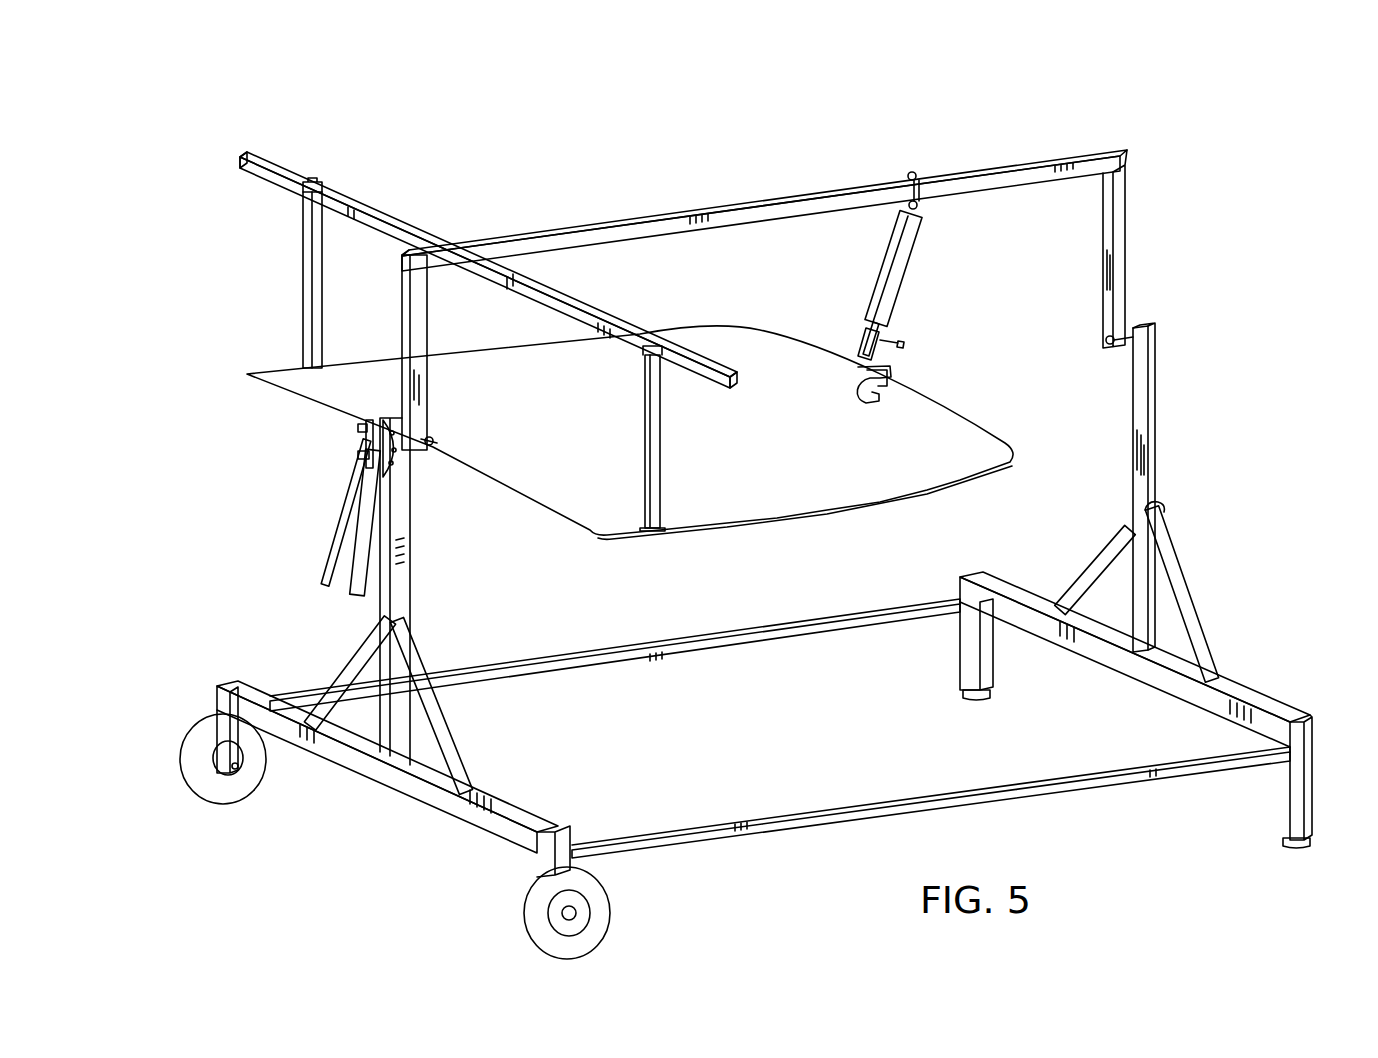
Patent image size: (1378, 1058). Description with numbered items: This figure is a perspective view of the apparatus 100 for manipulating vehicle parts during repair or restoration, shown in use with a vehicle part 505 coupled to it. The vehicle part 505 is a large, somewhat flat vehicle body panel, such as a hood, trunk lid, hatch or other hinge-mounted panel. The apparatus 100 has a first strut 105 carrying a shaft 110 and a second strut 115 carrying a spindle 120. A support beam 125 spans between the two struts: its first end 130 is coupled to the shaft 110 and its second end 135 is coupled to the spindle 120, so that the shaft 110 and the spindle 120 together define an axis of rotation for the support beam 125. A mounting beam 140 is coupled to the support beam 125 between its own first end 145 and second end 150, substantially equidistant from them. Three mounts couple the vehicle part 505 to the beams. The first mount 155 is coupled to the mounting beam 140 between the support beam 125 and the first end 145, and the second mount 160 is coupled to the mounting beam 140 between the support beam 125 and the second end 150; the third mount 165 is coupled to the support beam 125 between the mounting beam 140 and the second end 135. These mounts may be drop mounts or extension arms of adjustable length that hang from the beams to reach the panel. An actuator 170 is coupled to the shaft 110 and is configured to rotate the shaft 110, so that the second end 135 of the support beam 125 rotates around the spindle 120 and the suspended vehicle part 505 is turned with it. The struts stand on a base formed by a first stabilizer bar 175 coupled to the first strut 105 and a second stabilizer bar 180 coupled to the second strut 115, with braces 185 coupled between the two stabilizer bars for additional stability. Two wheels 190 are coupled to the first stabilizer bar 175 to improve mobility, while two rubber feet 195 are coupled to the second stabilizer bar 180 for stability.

The apparatus 100 is at (543, 99).
The first strut 105 is at (418, 592).
The shaft 110 is at (435, 440).
The second strut 115 is at (1157, 406).
The spindle 120 is at (1104, 339).
The support beam 125 is at (720, 210).
The first end 130 is at (401, 312).
The second end 135 is at (1130, 242).
The mounting beam 140 is at (386, 218).
The first end 145 is at (716, 389).
The second end 150 is at (245, 171).
The first mount 155 is at (643, 440).
The second mount 160 is at (302, 272).
The third mount 165 is at (908, 260).
The actuator 170 is at (320, 450).
The first stabilizer bar 175 is at (412, 800).
The second stabilizer bar 180 is at (1268, 697).
The braces 185 is at (595, 668).
The wheels 190 is at (178, 764).
The rubber feet 195 is at (976, 704).
The vehicle part 505 is at (758, 333).